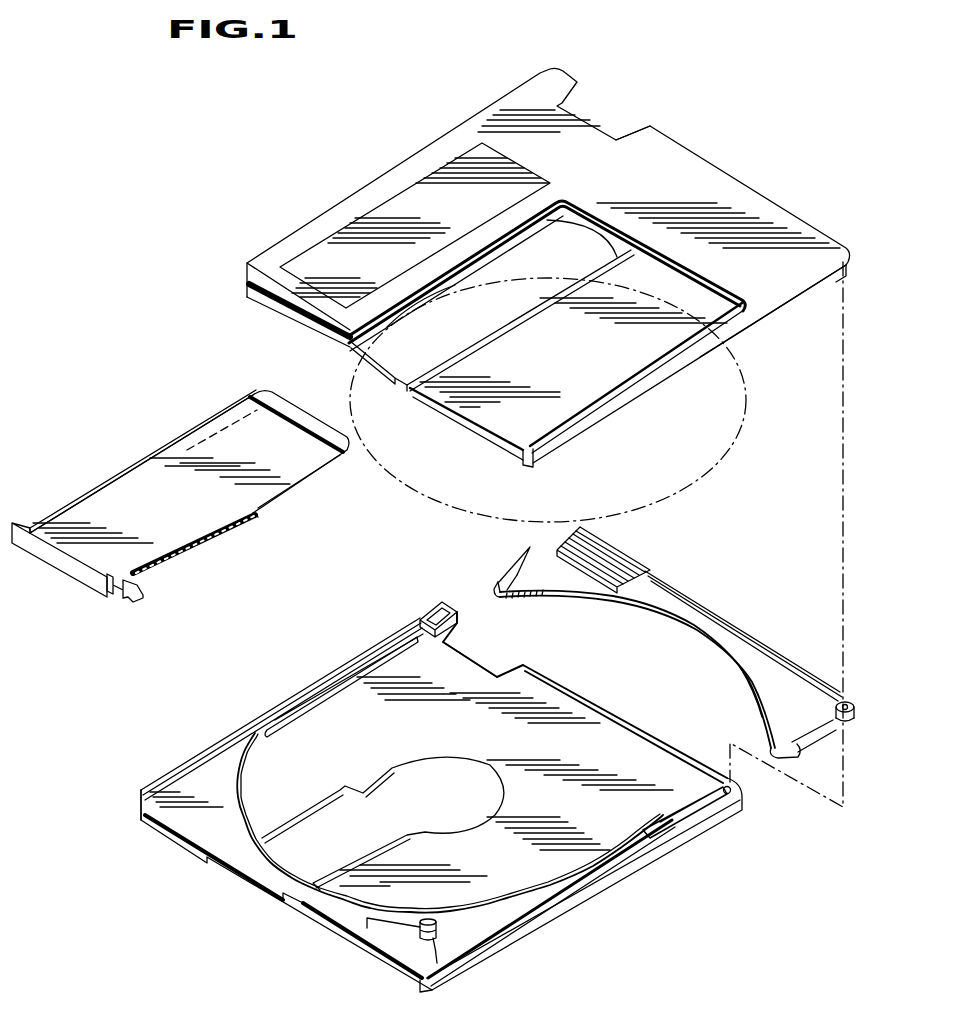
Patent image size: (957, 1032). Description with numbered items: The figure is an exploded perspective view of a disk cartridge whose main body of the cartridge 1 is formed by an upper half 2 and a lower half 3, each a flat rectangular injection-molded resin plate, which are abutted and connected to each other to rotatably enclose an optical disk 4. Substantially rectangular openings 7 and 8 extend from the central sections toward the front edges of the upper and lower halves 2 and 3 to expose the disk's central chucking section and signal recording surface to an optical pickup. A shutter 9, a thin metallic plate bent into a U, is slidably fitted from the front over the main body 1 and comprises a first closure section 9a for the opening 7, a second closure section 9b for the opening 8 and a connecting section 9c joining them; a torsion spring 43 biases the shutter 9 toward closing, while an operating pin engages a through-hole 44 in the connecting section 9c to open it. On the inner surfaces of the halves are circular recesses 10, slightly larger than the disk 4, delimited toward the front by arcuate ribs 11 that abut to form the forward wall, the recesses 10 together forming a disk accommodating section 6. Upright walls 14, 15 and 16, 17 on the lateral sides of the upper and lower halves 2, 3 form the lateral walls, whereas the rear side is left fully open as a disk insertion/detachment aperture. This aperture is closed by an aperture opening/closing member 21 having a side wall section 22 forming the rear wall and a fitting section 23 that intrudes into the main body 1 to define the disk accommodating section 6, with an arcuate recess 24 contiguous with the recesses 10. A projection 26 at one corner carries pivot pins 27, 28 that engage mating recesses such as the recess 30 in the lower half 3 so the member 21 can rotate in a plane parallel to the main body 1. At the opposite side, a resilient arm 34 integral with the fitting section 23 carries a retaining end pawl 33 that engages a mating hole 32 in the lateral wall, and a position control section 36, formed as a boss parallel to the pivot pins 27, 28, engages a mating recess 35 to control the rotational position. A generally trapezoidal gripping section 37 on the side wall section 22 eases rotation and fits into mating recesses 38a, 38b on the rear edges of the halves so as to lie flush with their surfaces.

The main body of the cartridge 1 is at (238, 320).
The upper half 2 is at (360, 200).
The lower half 3 is at (610, 873).
The optical disk 4 is at (740, 438).
The disk accommodating section 6 is at (360, 694).
The opening 7 is at (467, 267).
The opening 8 is at (327, 807).
The shutter 9 is at (110, 493).
The first closure section 9a is at (210, 418).
The second closure section 9b is at (307, 482).
The connecting section 9c is at (63, 557).
The circular recess 10 is at (260, 727).
The arcuate rib 11 is at (240, 765).
The upright wall 14 is at (245, 278).
The upright wall 15 is at (758, 322).
The upright wall 16 is at (147, 787).
The upright wall 17 is at (550, 910).
The aperture opening/closing member 21 is at (656, 652).
The side wall section 22 is at (690, 593).
The fitting section 23 is at (760, 663).
The arcuate recess 24 is at (670, 617).
The projection 26 is at (833, 705).
The pivot pin 27 is at (837, 687).
The pivot pin 28 is at (838, 730).
The mating recess 30 is at (733, 800).
The mating hole 32 is at (417, 617).
The retaining end pawl 33 is at (523, 557).
The resilient arm 34 is at (507, 577).
The mating recess 35 is at (686, 830).
The position control section 36 is at (770, 740).
The gripping section 37 is at (627, 560).
The mating recess 38a is at (627, 135).
The mating recess 38b is at (497, 677).
The torsion spring 43 is at (413, 935).
The through-hole 44 is at (110, 597).